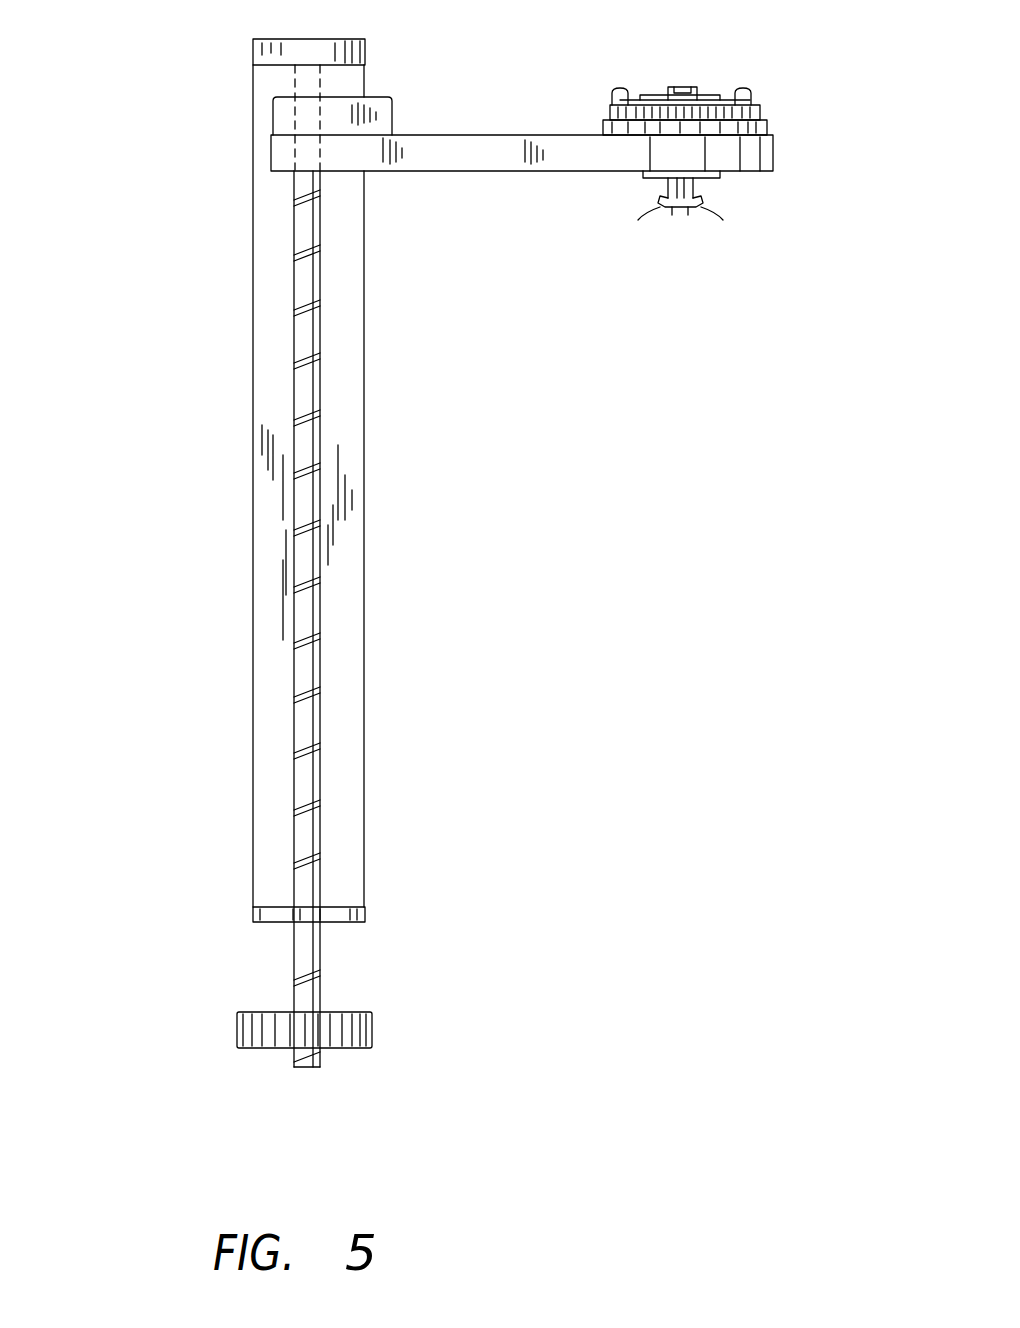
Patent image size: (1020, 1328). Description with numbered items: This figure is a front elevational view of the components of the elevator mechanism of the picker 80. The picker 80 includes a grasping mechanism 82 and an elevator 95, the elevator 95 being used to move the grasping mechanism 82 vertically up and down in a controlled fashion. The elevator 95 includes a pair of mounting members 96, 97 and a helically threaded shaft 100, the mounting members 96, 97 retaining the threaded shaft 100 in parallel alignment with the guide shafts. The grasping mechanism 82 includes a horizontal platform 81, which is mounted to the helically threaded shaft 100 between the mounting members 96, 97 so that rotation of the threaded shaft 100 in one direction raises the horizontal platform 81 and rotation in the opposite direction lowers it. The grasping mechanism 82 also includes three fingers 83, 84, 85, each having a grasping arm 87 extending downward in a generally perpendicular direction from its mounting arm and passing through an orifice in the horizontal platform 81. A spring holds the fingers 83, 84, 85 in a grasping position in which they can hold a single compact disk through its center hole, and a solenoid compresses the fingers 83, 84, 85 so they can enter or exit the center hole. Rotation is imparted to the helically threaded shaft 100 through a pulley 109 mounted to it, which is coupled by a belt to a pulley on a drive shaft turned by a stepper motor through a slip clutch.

The picker 80 is at (479, 535).
The horizontal platform 81 is at (449, 147).
The grasping mechanism 82 is at (800, 52).
The finger 83 is at (663, 203).
The finger 84 is at (678, 208).
The finger 85 is at (698, 205).
The grasping arm 87 is at (665, 183).
The elevator 95 is at (365, 508).
The mounting member 96 is at (367, 67).
The mounting member 97 is at (362, 921).
The helically threaded shaft 100 is at (312, 366).
The pulley 109 is at (372, 1027).